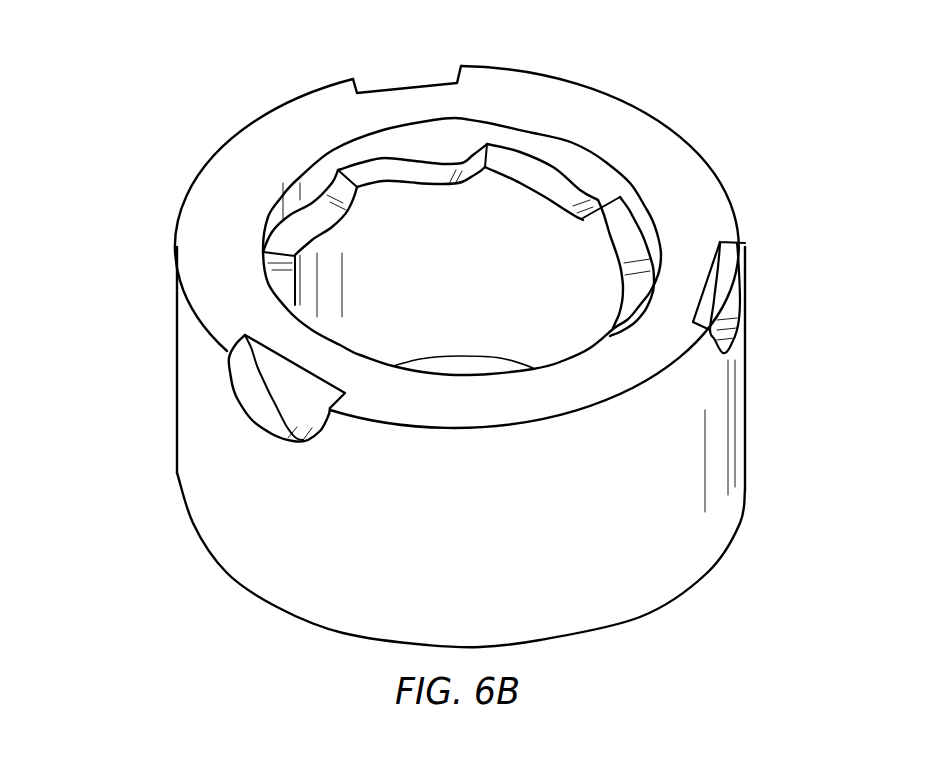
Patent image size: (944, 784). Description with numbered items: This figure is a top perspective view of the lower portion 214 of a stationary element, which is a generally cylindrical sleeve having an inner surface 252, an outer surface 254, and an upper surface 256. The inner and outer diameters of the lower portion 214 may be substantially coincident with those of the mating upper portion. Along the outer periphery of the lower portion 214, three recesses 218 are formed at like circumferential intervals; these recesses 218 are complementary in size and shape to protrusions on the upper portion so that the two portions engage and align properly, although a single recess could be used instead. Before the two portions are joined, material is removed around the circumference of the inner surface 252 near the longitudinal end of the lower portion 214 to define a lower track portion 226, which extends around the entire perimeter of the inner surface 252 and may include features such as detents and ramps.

The lower portion 214 is at (717, 442).
The recesses 218 is at (414, 84).
The lower track portion 226 is at (585, 257).
The inner surface 252 is at (294, 315).
The outer surface 254 is at (190, 360).
The upper surface 256 is at (668, 165).